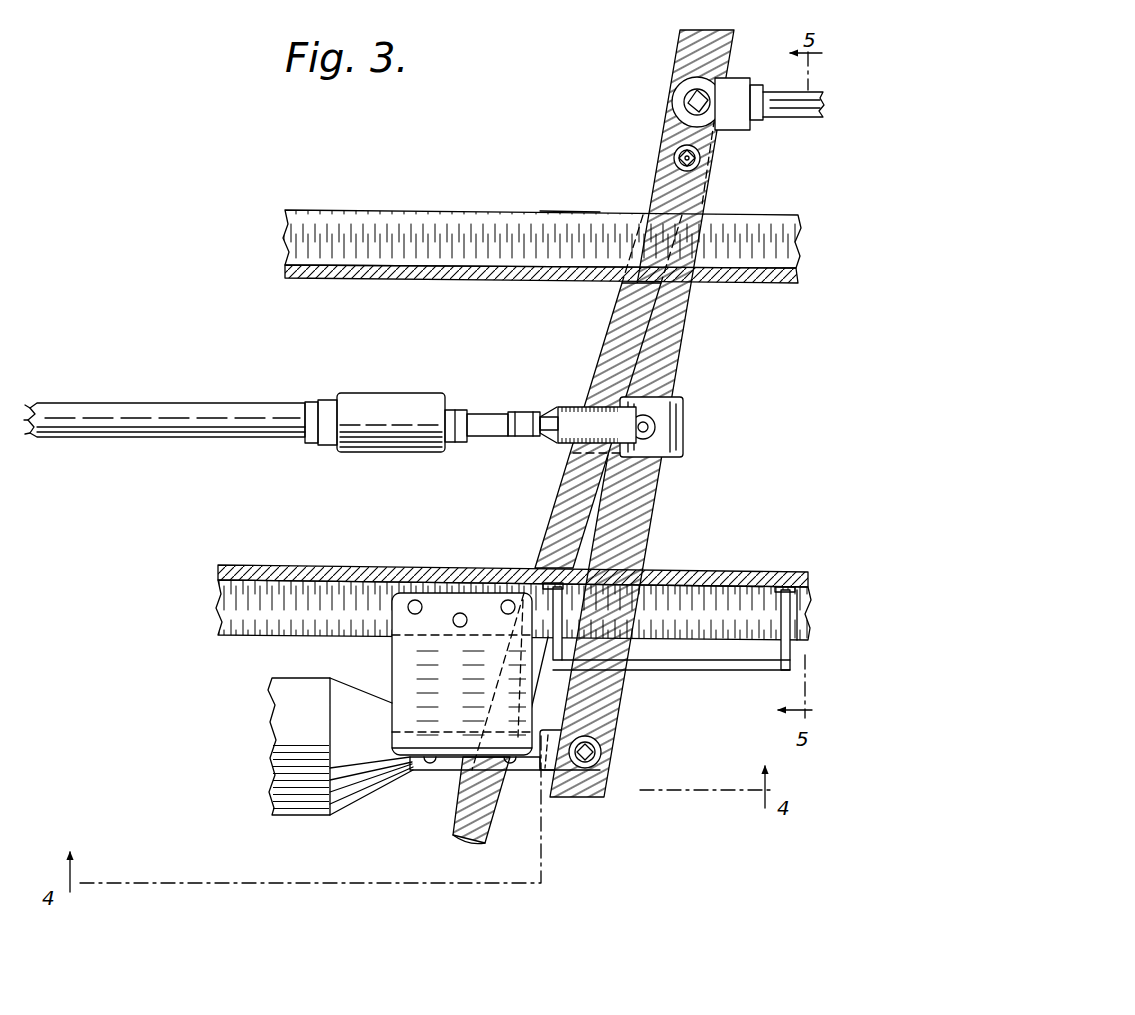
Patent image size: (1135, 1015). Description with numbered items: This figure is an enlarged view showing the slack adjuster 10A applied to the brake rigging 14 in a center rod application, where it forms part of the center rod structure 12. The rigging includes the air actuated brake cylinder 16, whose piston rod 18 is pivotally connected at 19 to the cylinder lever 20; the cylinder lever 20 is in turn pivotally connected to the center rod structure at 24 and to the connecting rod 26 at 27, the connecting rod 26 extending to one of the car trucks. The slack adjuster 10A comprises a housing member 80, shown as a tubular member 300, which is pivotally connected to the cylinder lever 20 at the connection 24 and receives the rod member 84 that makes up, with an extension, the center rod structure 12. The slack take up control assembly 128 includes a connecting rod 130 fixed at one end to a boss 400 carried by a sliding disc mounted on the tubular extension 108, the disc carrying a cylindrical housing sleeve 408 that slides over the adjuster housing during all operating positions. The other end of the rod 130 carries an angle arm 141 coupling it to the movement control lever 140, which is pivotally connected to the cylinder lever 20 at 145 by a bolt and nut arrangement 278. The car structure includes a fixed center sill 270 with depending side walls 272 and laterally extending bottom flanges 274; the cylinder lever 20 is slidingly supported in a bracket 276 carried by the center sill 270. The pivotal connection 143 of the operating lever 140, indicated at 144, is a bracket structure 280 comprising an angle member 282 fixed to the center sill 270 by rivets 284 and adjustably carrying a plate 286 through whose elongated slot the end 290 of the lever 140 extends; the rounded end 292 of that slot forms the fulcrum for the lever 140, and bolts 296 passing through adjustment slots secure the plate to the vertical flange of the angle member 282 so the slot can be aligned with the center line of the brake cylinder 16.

The slack adjuster 10A is at (296, 430).
The center rod structure 12 is at (120, 453).
The brake rigging arrangement 14 is at (713, 401).
The brake cylinder 16 is at (287, 821).
The piston rod 18 is at (548, 733).
The pivotal connection 19 is at (603, 752).
The cylinder lever 20 is at (655, 492).
The pivotal connection 24 is at (661, 431).
The connecting rod 26 is at (794, 112).
The pivotal connection 27 is at (704, 97).
The housing member 80 is at (164, 444).
The rod member 84 is at (30, 402).
The tubular extension 108 is at (500, 440).
The slack take up control assembly 128 is at (524, 405).
The connecting rod 130 is at (485, 417).
The movement control lever 140 is at (640, 328).
The angle arm 141 is at (618, 420).
The pivotal connection 143 is at (465, 846).
The fulcrum mounting 144 is at (455, 778).
The pivotal connection 145 is at (676, 157).
The center sill 270 is at (542, 223).
The side walls 272 is at (460, 265).
The bottom flanges 274 is at (575, 206).
The bracket 276 is at (694, 664).
The bolt and nut arrangement 278 is at (701, 165).
The bracket structure 280 is at (425, 654).
The angle member 282 is at (391, 684).
The rivets 284 is at (462, 612).
The plate 286 is at (556, 790).
The end of operating lever 290 is at (480, 822).
The rounded end of slot 292 is at (482, 730).
The bolts 296 is at (385, 790).
The tubular member 300 is at (158, 388).
The boss 400 is at (457, 416).
The cylindrical housing sleeve 408 is at (378, 410).